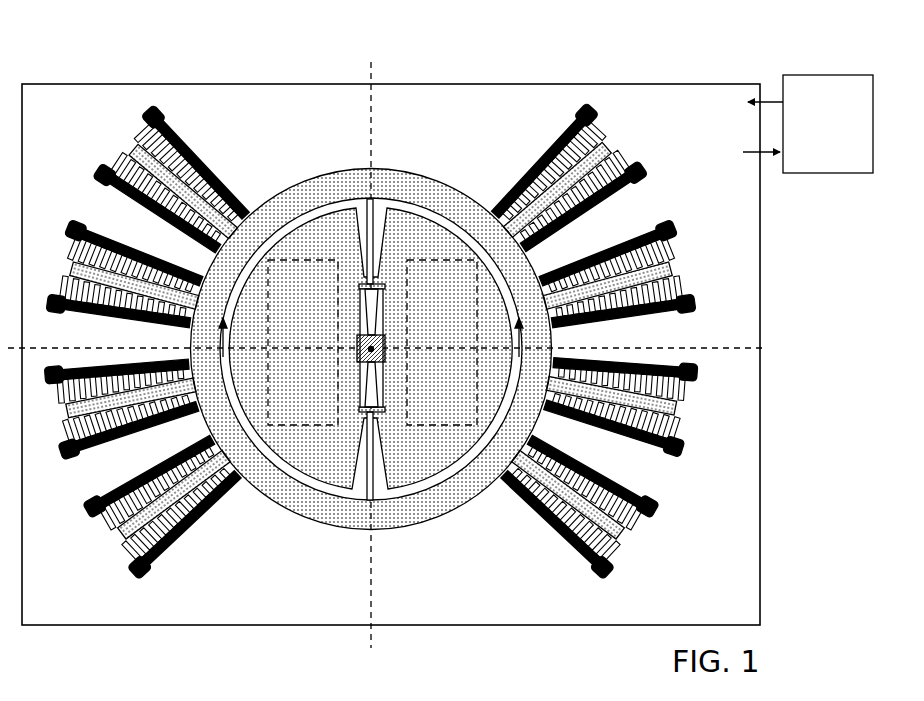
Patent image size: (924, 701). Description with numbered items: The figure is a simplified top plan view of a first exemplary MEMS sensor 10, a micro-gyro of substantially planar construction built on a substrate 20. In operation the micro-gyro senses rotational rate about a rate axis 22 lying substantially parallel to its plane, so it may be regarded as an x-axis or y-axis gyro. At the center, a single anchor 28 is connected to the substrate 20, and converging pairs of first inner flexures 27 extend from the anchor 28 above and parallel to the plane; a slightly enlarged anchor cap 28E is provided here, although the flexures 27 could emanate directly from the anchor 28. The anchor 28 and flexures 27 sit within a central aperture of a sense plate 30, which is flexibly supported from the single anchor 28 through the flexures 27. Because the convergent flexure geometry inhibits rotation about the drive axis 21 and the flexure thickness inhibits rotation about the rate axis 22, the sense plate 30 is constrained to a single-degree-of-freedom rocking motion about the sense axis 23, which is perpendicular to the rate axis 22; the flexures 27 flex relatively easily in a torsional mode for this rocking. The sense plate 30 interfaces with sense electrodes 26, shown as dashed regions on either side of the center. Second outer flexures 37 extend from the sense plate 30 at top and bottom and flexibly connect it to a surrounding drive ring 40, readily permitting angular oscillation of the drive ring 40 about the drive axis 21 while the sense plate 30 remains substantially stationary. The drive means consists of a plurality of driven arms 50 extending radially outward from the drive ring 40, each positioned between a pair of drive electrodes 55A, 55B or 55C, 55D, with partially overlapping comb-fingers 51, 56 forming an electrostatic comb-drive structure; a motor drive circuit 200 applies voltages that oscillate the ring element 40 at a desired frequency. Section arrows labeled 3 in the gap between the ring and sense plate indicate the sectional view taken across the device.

The MEMS sensor 10 is at (612, 60).
The substrate 20 is at (729, 613).
The drive axis 21 is at (368, 349).
The rate axis 22 is at (413, 351).
The sense axis 23 is at (363, 345).
The sense electrodes 26 is at (316, 426).
The first inner flexures 27 is at (378, 320).
The single anchor 28 is at (377, 340).
The anchor hub 28E is at (382, 349).
The sense plate 30 is at (350, 233).
The second outer flexures 37 is at (370, 205).
The drive ring 40 is at (407, 178).
The driven arms 50 is at (610, 150).
The comb-fingers 51 is at (568, 146).
The drive electrode 55A is at (591, 113).
The drive electrode 55B is at (644, 169).
The drive electrode 55C is at (674, 230).
The drive electrode 55D is at (698, 305).
The comb-fingers 56 is at (535, 168).
The motor drive circuit 200 is at (812, 75).
The section line 3- 3 is at (370, 329).